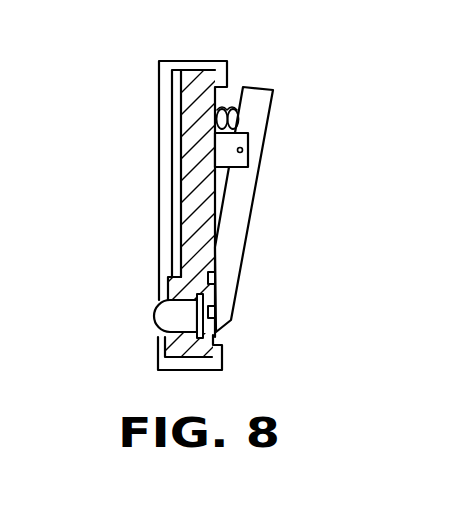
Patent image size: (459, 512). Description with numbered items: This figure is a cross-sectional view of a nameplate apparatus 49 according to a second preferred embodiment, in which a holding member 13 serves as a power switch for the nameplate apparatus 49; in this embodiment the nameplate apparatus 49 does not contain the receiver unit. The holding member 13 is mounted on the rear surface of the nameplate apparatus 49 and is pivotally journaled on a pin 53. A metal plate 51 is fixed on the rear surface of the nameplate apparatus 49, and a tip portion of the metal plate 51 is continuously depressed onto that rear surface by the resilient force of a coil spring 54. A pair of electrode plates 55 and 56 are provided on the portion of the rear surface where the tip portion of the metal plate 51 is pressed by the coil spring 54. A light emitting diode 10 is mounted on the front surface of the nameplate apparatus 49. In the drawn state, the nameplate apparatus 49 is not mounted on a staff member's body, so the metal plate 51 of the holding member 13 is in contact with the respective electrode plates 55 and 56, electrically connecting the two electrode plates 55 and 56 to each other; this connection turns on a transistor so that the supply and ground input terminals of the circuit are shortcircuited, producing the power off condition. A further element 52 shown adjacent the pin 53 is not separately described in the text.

The nameplate apparatus 49 is at (104, 80).
The light emitting diode 10 is at (163, 322).
The holding member 13 is at (278, 195).
The metal plate 51 is at (242, 223).
The block 52 is at (243, 136).
The pin 53 is at (244, 150).
The coil spring 54 is at (230, 106).
The electrode plate 55 is at (215, 280).
The electrode plate 56 is at (208, 311).